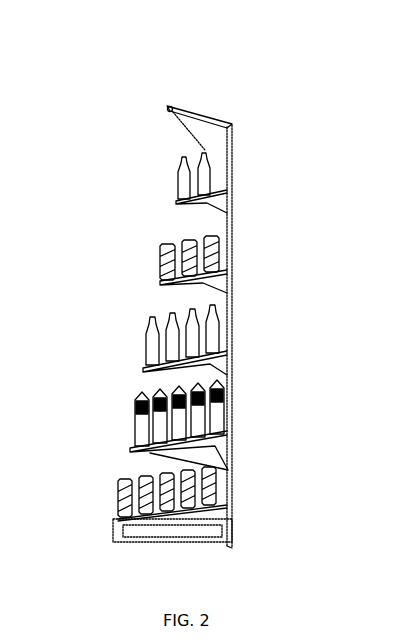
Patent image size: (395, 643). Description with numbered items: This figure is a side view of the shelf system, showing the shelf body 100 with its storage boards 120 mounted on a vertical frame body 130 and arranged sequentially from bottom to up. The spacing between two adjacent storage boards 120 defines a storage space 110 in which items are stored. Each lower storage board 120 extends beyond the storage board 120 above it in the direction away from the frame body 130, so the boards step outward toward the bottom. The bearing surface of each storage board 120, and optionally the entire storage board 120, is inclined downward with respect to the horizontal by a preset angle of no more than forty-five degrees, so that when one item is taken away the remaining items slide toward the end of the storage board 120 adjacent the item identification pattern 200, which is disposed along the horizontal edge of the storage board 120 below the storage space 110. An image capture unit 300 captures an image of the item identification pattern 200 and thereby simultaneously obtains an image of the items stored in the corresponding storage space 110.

The shelf body 100 is at (198, 84).
The storage space 110 is at (180, 232).
The storage board 120 is at (212, 368).
The frame body 130 is at (232, 276).
The item identification pattern 200 is at (202, 177).
The image capture unit 300 is at (167, 109).